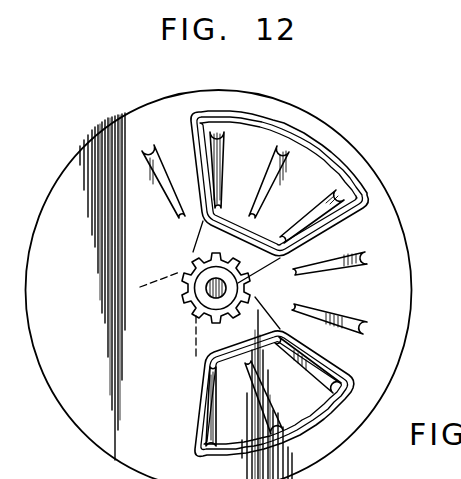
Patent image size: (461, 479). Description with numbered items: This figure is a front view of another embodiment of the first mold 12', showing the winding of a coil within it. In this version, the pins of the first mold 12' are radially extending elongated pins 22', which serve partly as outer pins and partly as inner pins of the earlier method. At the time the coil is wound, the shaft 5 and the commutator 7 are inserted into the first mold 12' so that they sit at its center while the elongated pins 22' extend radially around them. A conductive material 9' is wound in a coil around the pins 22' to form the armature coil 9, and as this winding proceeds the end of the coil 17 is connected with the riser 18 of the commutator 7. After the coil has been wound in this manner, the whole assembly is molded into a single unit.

The shaft 5 is at (213, 285).
The commutator 7 is at (193, 312).
The armature coil 9 is at (279, 171).
The conductive material 9' is at (307, 320).
The first mold 12' is at (241, 284).
The end of the coil 17 is at (280, 274).
The riser 18 is at (212, 247).
The elongated pins 22' is at (277, 187).